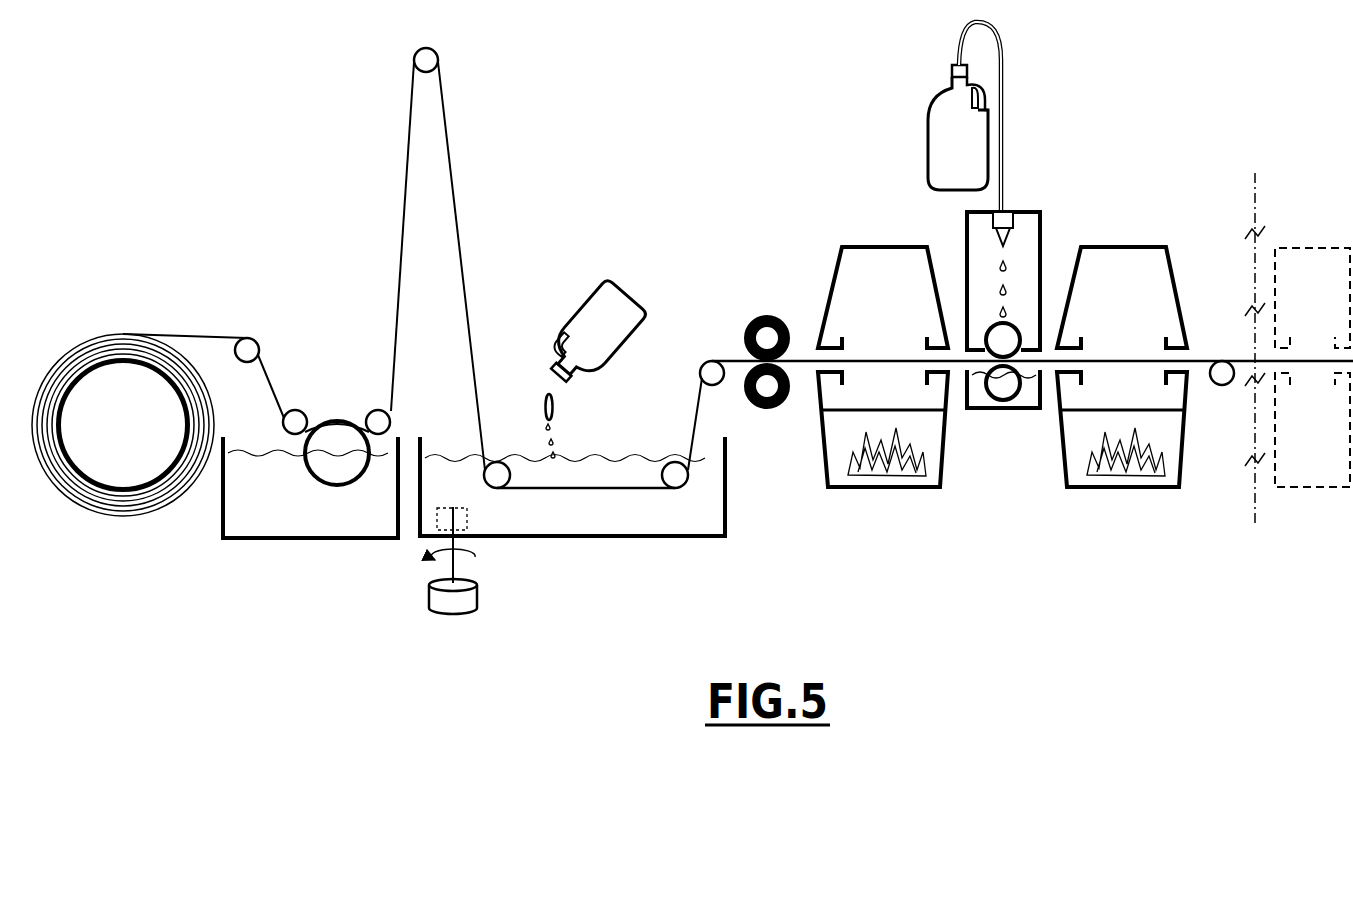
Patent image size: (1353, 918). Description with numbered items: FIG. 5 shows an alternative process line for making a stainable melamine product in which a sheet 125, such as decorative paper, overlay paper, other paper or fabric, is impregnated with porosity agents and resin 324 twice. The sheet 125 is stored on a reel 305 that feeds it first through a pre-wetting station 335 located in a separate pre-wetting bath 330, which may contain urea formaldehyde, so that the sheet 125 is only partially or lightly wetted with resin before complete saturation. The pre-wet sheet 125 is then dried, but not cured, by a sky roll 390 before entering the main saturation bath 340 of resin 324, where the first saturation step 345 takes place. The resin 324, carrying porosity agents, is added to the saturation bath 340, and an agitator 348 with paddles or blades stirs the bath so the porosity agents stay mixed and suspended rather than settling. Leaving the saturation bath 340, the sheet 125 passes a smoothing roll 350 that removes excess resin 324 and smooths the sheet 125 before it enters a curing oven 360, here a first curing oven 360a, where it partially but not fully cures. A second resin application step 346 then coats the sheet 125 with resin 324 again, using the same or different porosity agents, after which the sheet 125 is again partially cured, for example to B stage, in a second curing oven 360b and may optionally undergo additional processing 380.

The reel 305 is at (88, 360).
The sheet 125 is at (213, 330).
The pre-wetting station 335 is at (342, 378).
The pre-wetting bath 330 is at (323, 513).
The sky roll 390 is at (408, 110).
The resin 324 is at (568, 308).
The saturation bath 340 is at (687, 518).
The saturation step 345 is at (592, 488).
The agitator 348 is at (477, 598).
The smoothing roll 350 is at (765, 313).
The curing oven 360 is at (979, 321).
The first curing oven 360a is at (873, 247).
The second curing oven 360b is at (1140, 247).
The second resin application step 346 is at (1003, 444).
The additional processing 380 is at (1318, 247).